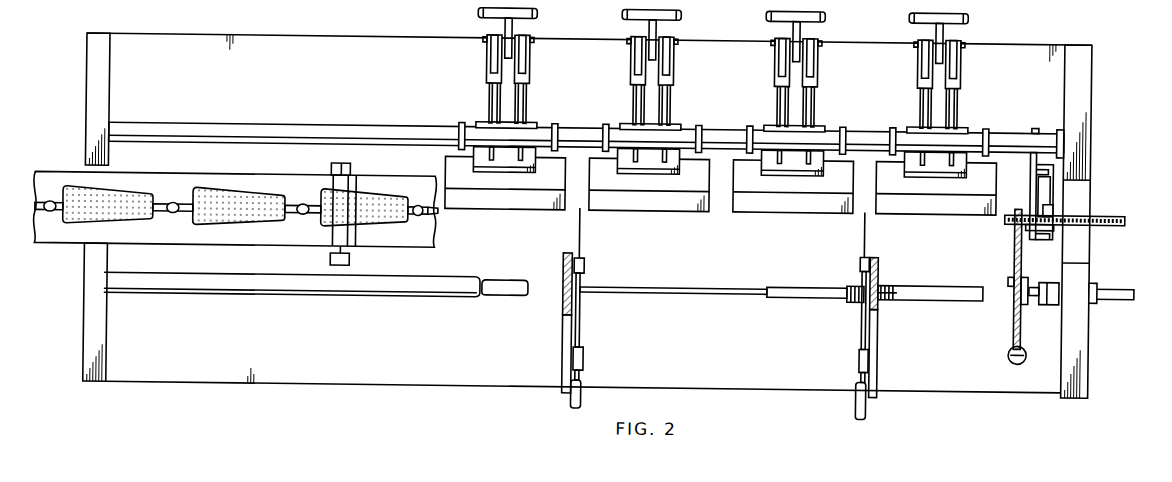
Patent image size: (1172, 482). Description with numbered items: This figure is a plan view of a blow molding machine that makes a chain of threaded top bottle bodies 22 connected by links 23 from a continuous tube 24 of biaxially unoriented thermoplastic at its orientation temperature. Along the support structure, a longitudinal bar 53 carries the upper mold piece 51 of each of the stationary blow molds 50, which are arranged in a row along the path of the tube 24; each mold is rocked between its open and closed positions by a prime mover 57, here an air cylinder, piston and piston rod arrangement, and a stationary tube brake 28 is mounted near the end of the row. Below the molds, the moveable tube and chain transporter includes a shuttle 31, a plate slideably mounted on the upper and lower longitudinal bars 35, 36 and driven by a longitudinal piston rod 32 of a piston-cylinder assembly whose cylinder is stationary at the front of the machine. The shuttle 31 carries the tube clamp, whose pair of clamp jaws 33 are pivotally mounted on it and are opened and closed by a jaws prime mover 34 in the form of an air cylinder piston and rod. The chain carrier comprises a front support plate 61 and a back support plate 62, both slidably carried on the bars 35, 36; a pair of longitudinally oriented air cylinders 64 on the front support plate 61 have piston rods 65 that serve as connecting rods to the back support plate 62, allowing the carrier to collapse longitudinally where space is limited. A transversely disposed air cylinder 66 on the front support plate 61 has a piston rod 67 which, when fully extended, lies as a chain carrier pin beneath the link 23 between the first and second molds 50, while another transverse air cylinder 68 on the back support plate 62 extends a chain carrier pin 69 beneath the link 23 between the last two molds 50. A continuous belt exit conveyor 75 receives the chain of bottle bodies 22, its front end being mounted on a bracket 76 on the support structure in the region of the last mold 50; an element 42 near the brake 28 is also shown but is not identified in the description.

The bottle bodies 22 is at (147, 212).
The links 23 is at (440, 210).
The continuous tube 24 is at (1108, 204).
The stationary tube brake 28 is at (1052, 183).
The shuttle 31 is at (1026, 300).
The longitudinal piston rod 32 is at (1122, 276).
The clamp jaws 33 is at (1015, 240).
The jaws prime mover 34 is at (1014, 355).
The upper longitudinal bar 35 is at (290, 285).
The lower longitudinal bar 36 is at (503, 291).
The connector 42 is at (1052, 211).
The stationary blow molds 50 is at (477, 110).
The upper mold piece 51 is at (512, 195).
The longitudinal bar 53 is at (250, 126).
The prime mover 57 is at (622, 6).
The front support plate 61 is at (875, 343).
The back support plate 62 is at (563, 360).
The longitudinally oriented air cylinders 64 is at (940, 291).
The piston rods 65 is at (698, 289).
The transversely disposed air cylinder 66 is at (858, 398).
The piston rod 67 is at (866, 306).
The transverse air cylinder 68 is at (575, 395).
The chain carrier pin 69 is at (584, 310).
The continuous belt exit conveyor 75 is at (75, 175).
The bracket 76 is at (353, 162).